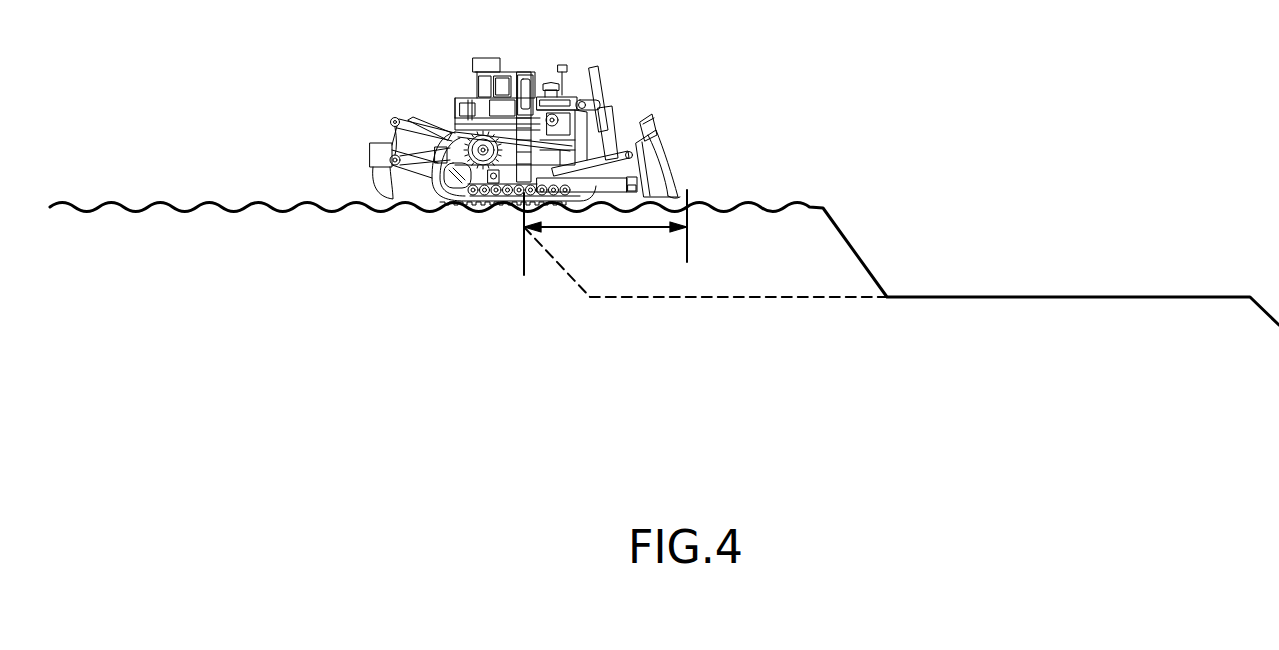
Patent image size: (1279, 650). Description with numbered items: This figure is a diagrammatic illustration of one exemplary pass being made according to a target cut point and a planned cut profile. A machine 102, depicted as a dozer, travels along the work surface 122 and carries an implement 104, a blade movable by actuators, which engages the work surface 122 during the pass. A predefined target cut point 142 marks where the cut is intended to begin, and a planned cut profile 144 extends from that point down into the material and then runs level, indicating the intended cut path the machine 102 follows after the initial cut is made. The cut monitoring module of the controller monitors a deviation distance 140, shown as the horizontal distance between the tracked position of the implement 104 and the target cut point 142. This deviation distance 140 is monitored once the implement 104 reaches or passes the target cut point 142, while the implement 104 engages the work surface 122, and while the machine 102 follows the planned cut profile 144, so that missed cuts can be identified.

The machine 102 is at (487, 63).
The implement 104 is at (652, 148).
The work surface 122 is at (1068, 297).
The deviation distance 140 is at (640, 228).
The target cut point 142 is at (520, 210).
The planned cut profile 144 is at (592, 297).